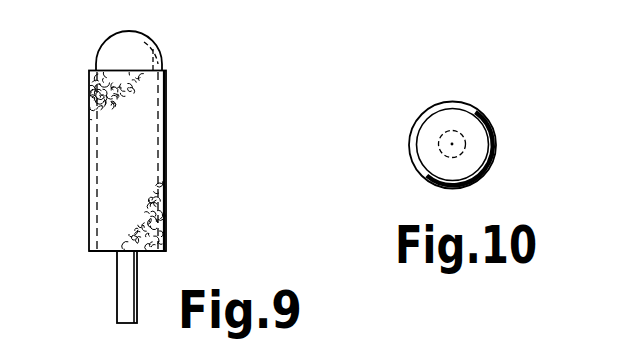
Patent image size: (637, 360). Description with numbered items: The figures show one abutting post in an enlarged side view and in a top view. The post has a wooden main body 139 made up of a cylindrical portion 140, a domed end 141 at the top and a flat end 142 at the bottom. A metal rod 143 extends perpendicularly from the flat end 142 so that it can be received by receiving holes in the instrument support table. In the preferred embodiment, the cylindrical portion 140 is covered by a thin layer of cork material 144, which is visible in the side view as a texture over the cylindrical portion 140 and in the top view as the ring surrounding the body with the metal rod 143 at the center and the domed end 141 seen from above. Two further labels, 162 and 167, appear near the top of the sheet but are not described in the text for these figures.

In FIG. 9, the wooden main body 139 is at (92, 181).
In FIG. 9, the cylindrical portion 140 is at (164, 70).
In FIG. 10, the cylindrical portion 140 is at (412, 156).
In FIG. 9, the domed end 141 is at (143, 50).
In FIG. 10, the domed end 141 is at (482, 138).
In FIG. 9, the flat end 142 is at (100, 252).
In FIG. 9, the metal rod 143 is at (123, 291).
In FIG. 10, the metal rod 143 is at (440, 132).
In FIG. 9, the thin layer of cork material 144 is at (93, 110).
In FIG. 10, the thin layer of cork material 144 is at (471, 108).
In FIG. 9, the reference label 162 is at (280, 0).
In FIG. 9, the reference label 167 is at (312, 0).